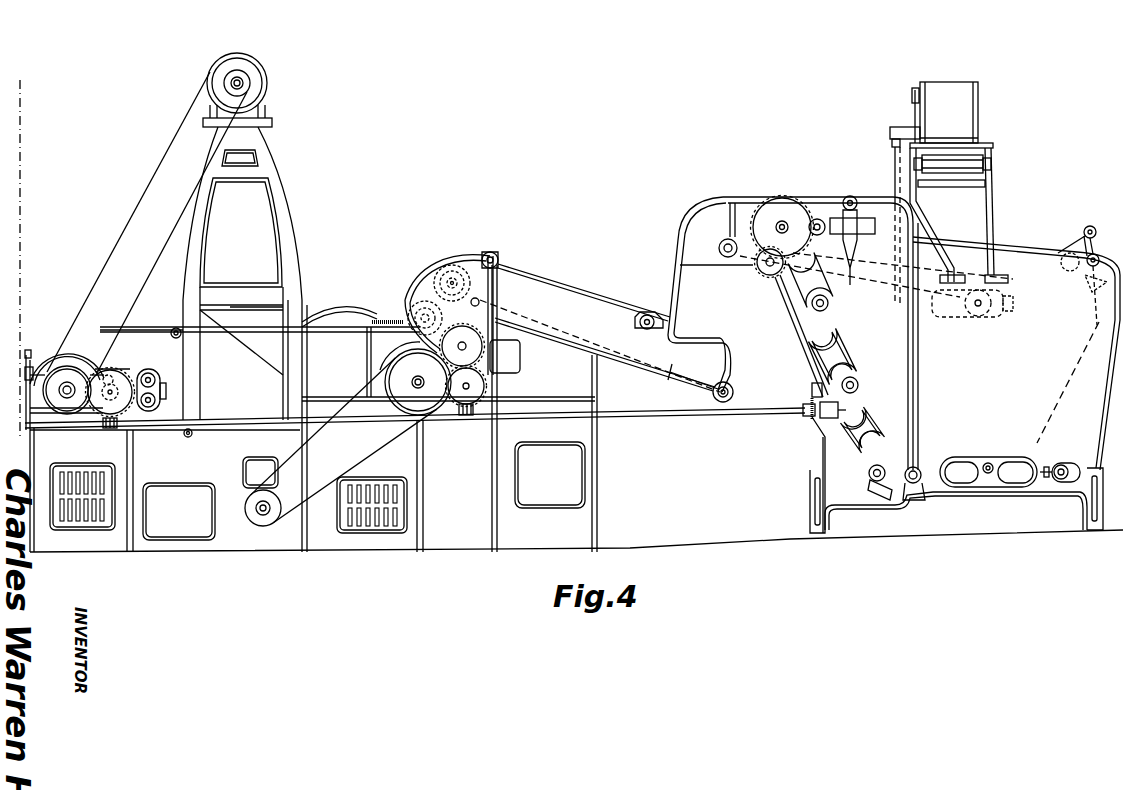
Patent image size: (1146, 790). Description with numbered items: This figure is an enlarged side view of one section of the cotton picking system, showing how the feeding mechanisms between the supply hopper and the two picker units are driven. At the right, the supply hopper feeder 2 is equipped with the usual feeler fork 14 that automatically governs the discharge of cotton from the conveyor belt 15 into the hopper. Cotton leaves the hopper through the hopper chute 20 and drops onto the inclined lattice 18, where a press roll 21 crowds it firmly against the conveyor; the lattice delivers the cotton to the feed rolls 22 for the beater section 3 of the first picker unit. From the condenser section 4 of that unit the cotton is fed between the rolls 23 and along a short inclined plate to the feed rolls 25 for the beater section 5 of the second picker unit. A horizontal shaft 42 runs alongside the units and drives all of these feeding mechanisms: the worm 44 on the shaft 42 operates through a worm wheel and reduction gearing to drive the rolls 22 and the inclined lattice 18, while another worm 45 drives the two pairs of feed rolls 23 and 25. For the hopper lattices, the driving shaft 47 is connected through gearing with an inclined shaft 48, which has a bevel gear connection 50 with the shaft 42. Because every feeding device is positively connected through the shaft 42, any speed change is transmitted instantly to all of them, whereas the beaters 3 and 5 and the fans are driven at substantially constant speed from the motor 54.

The supply hopper feeder 2 is at (1027, 250).
The beater section 3 is at (363, 345).
The condenser section 4 is at (153, 275).
The beater section 5 is at (50, 343).
The feeler fork 14 is at (1067, 386).
The conveyor belt 15 is at (990, 162).
The inclined lattice 18 is at (559, 320).
The hopper chute 20 is at (676, 270).
The press roll 21 is at (647, 313).
The feed rolls 22 is at (412, 300).
The rolls 23 is at (160, 387).
The feed rolls 25 is at (124, 372).
The horizontal shaft 42 is at (633, 416).
The worm 44 is at (468, 418).
The worm 45 is at (110, 427).
The driving shaft 47 is at (783, 226).
The inclined shaft 48 is at (836, 314).
The bevel gear connection 50 is at (812, 417).
The motor 54 is at (248, 78).